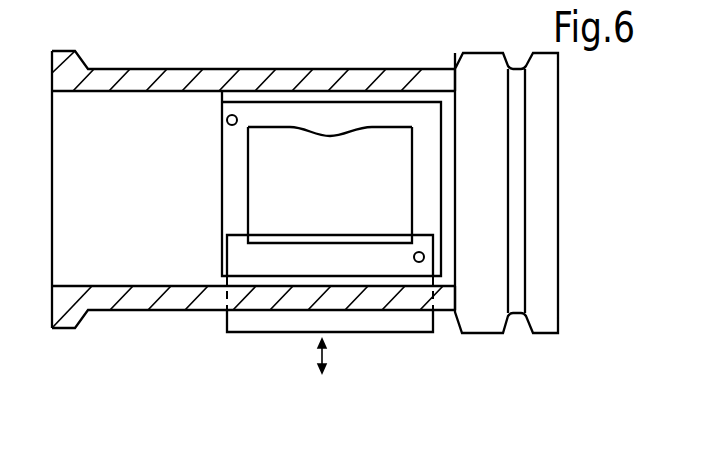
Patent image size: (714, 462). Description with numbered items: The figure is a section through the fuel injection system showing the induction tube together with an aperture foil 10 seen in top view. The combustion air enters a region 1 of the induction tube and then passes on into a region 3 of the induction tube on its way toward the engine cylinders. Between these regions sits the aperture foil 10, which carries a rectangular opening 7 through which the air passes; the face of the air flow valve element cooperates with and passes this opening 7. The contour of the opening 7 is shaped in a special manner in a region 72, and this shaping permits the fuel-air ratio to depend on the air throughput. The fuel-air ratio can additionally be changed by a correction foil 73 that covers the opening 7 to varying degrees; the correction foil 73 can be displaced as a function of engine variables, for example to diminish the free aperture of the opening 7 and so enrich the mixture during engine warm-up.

The region of the induction tube 1 is at (68, 248).
The region of the induction tube 3 is at (542, 268).
The opening 7 is at (383, 163).
The aperture foil 10 is at (263, 113).
The region of the opening contour 72 is at (332, 136).
The correction foil 73 is at (377, 325).